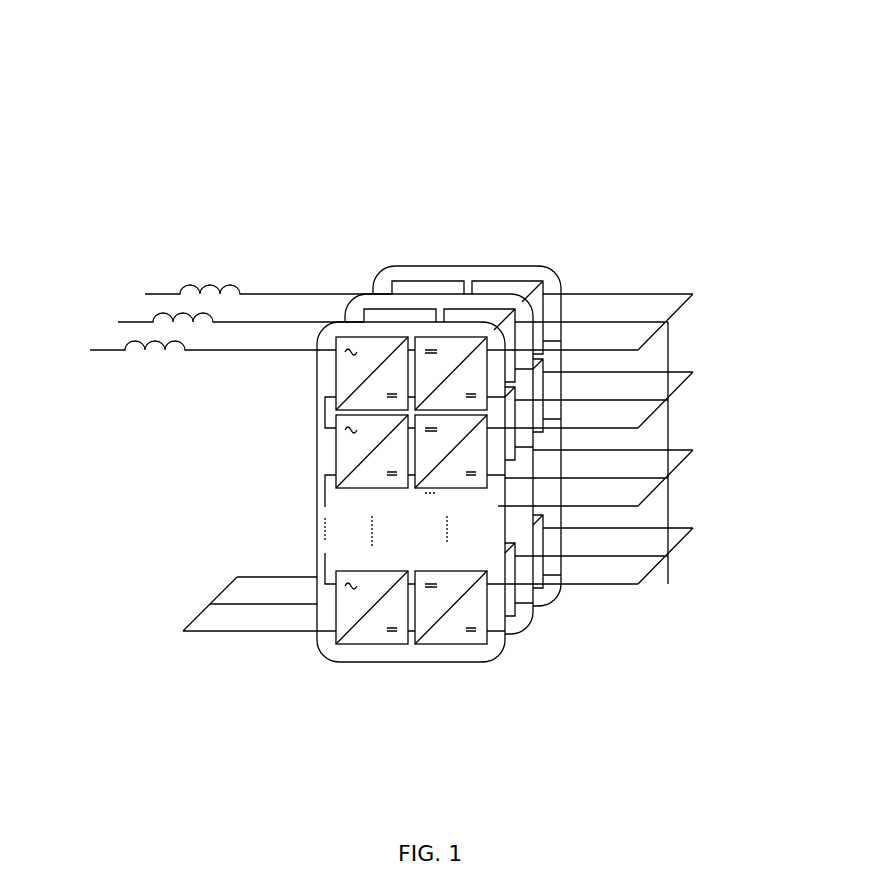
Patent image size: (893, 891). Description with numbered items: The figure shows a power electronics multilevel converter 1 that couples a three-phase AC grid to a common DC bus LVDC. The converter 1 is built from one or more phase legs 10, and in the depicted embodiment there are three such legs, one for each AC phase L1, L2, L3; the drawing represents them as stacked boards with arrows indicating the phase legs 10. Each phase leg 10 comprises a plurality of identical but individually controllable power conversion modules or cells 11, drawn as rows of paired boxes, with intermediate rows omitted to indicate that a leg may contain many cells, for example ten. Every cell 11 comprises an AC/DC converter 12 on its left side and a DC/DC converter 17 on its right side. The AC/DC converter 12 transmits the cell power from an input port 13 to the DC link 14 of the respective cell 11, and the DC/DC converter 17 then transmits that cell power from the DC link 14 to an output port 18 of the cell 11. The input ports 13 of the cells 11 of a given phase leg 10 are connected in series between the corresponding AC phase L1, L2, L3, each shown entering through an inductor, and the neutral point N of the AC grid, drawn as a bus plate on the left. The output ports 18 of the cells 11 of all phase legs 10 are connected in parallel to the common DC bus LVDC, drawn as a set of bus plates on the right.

The power electronics multilevel converter 1 is at (424, 49).
The phase leg 10 is at (511, 256).
The cell 11 is at (303, 376).
The AC/DC converter 12 is at (370, 647).
The input port 13 is at (332, 561).
The DC link 14 is at (410, 561).
The DC/DC converter 17 is at (448, 647).
The output port 18 is at (492, 561).
The AC phase L1 is at (90, 350).
The AC phase L2 is at (118, 322).
The AC phase L3 is at (145, 294).
The neutral point N is at (213, 603).
The common DC bus LVDC is at (692, 298).